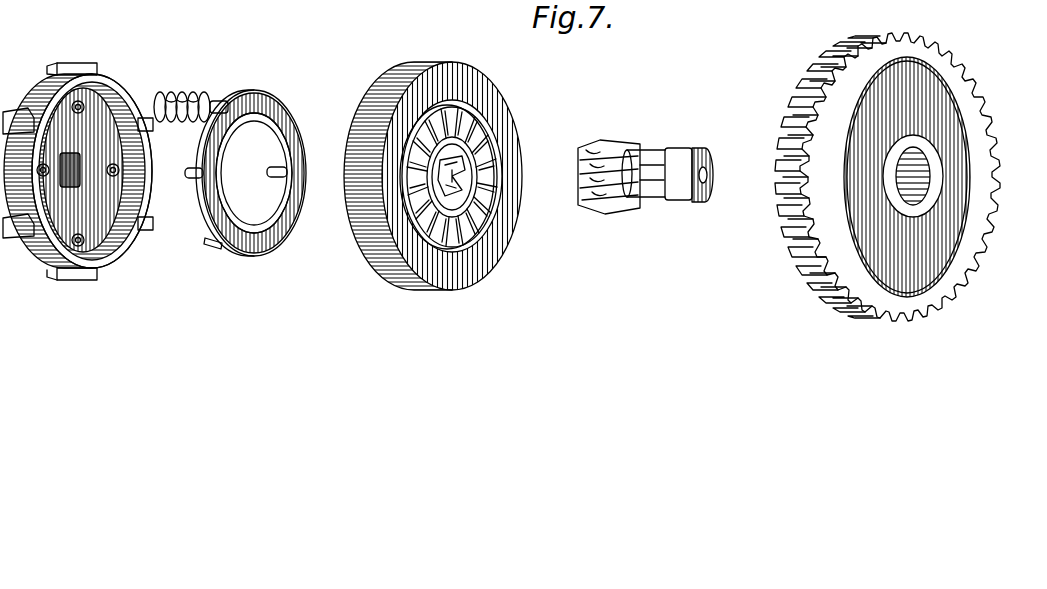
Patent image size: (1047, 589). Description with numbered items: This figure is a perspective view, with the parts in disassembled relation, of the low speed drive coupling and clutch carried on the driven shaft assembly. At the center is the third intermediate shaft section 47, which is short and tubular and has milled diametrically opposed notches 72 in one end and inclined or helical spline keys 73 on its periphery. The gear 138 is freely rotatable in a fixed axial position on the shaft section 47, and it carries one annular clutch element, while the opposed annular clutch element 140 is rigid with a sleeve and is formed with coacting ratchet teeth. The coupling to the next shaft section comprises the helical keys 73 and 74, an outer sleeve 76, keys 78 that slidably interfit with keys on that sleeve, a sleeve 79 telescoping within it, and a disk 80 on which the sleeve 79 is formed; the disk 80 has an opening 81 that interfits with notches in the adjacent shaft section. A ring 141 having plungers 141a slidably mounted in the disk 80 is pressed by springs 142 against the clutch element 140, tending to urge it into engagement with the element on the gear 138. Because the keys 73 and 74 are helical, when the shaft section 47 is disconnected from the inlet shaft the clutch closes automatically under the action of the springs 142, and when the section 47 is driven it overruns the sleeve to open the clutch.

The keys 78 is at (88, 70).
The sleeve 79 is at (110, 90).
The opening 81 is at (62, 182).
The disk 80 is at (155, 90).
The springs 142 is at (198, 82).
The ring 141 is at (280, 104).
The plungers 141a is at (225, 100).
The sleeve 76 is at (368, 104).
The clutch element 140 is at (477, 120).
The keys 74 is at (473, 157).
The keys 73 is at (627, 140).
The third intermediate shaft section 47 is at (658, 150).
The notches 72 is at (678, 160).
The gear 138 is at (988, 157).